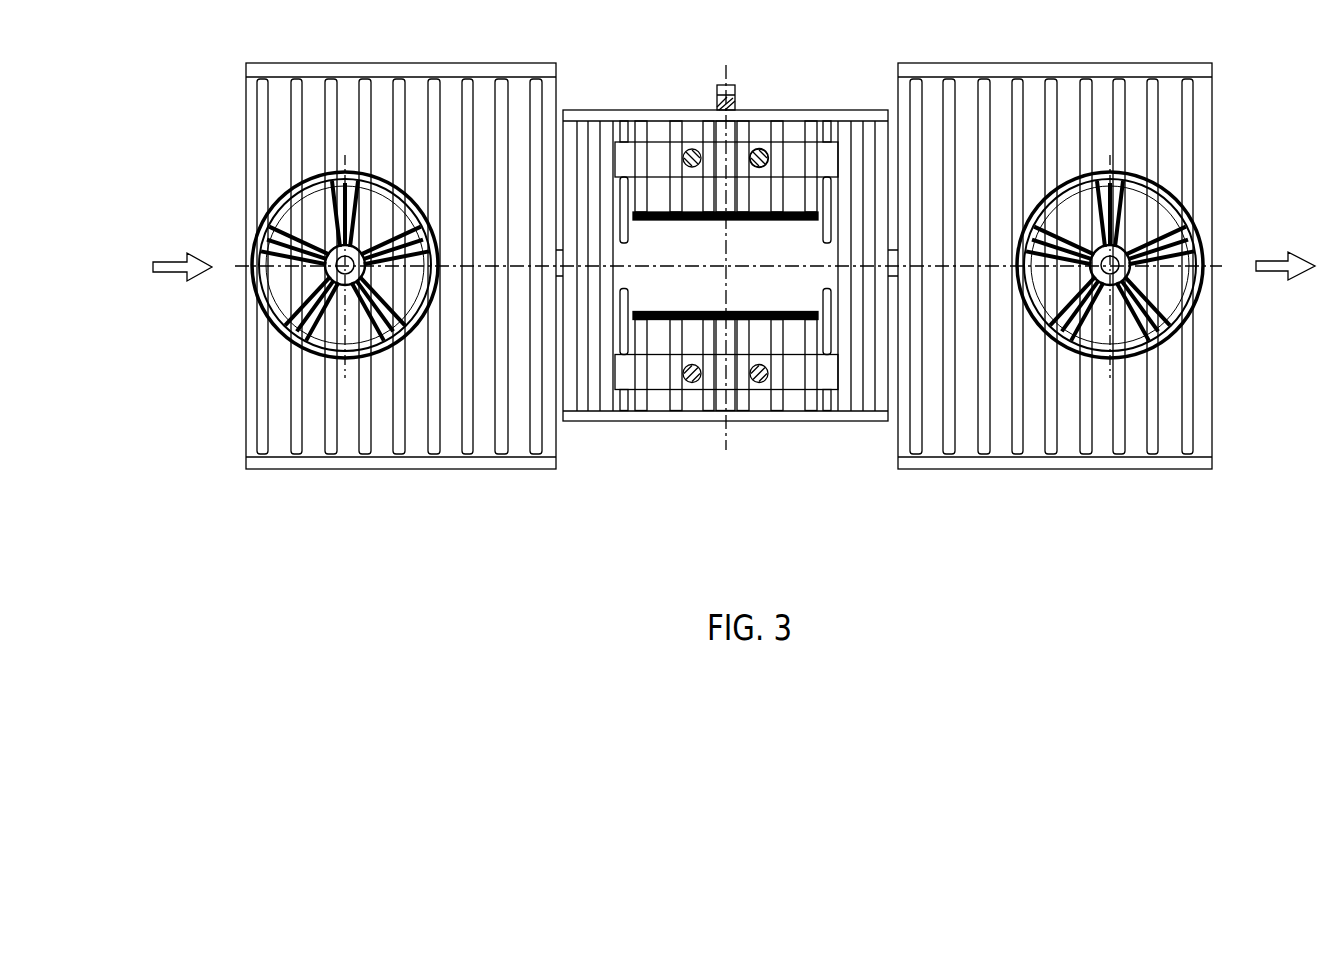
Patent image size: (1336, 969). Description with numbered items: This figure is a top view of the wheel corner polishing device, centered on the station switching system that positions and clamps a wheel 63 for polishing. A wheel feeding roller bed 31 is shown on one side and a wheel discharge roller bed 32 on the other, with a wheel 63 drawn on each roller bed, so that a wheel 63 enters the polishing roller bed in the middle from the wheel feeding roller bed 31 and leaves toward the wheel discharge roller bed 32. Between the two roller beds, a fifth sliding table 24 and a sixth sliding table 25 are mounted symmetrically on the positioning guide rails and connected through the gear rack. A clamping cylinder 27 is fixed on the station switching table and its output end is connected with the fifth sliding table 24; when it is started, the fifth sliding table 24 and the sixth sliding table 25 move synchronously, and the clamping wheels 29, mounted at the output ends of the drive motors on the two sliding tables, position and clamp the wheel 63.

The wheel feeding roller bed 31 is at (505, 76).
The wheel discharge roller bed 32 is at (995, 76).
The wheel 63 is at (272, 215).
The fifth sliding table 24 is at (665, 160).
The sixth sliding table 25 is at (663, 385).
The clamping cylinder 27 is at (722, 95).
The clamping wheel 29 is at (763, 158).